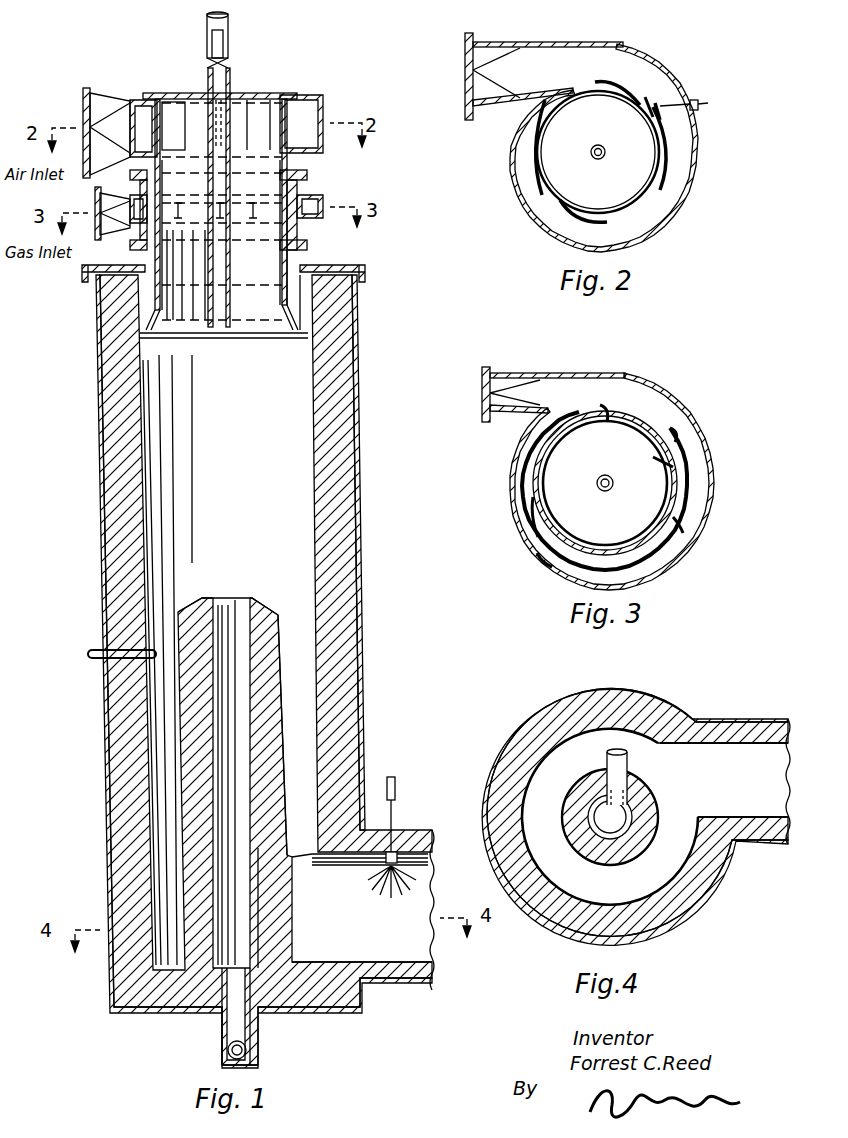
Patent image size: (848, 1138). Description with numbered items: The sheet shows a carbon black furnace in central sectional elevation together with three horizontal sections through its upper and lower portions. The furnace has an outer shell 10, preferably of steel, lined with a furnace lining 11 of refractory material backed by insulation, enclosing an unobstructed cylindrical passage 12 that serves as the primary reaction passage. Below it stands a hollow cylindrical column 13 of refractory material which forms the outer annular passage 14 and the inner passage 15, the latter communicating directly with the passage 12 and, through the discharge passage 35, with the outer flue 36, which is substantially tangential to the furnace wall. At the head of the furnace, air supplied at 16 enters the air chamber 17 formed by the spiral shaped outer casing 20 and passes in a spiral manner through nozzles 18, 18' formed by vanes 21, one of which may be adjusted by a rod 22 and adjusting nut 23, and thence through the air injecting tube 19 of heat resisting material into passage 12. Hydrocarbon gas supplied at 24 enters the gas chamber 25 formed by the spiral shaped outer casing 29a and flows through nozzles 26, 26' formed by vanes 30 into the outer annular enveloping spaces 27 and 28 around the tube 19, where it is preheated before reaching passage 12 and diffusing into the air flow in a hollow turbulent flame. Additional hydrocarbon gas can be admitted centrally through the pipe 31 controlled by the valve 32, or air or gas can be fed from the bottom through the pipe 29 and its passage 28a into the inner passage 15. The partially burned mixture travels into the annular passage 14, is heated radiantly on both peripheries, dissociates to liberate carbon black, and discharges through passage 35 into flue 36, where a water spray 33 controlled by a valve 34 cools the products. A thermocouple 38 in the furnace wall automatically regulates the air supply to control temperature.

In FIG. 1, the outer shell 10 is at (100, 583).
In FIG. 4, the outer shell 10 is at (512, 742).
In FIG. 1, the furnace lining 11 is at (118, 545).
In FIG. 4, the furnace lining 11 is at (555, 725).
In FIG. 1, the unobstructed cylindrical passage 12 is at (285, 452).
In FIG. 1, the hollow cylindrical column 13 is at (193, 725).
In FIG. 4, the hollow cylindrical column 13 is at (580, 805).
In FIG. 1, the outer annular passage 14 is at (300, 660).
In FIG. 4, the outer annular passage 14 is at (667, 860).
In FIG. 1, the inner passage 15 is at (242, 705).
In FIG. 1, the air supply 16 is at (88, 110).
In FIG. 2, the air supply 16 is at (472, 72).
In FIG. 1, the air chamber 17 is at (303, 118).
In FIG. 2, the air chamber 17 is at (645, 83).
In FIG. 1, the nozzle 18 is at (208, 127).
In FIG. 2, the nozzle 18 is at (598, 152).
In FIG. 1, the nozzle 18' is at (264, 125).
In FIG. 2, the nozzle 18' is at (599, 152).
In FIG. 1, the air injecting tube 19 is at (277, 328).
In FIG. 3, the air injecting tube 19 is at (653, 525).
In FIG. 2, the outer casing 20 is at (625, 52).
In FIG. 2, the vane 21 is at (597, 82).
In FIG. 2, the rod 22 is at (680, 101).
In FIG. 2, the adjusting nut 23 is at (697, 100).
In FIG. 1, the gas supply 24 is at (97, 200).
In FIG. 3, the gas supply 24 is at (482, 390).
In FIG. 1, the gas chamber 25 is at (310, 210).
In FIG. 3, the gas chamber 25 is at (670, 420).
In FIG. 1, the nozzle 26 is at (216, 225).
In FIG. 3, the nozzle 26 is at (607, 493).
In FIG. 1, the nozzle 26' is at (272, 225).
In FIG. 1, the outer annular enveloping space 27 is at (290, 258).
In FIG. 3, the outer annular enveloping space 27 is at (538, 477).
In FIG. 1, the annular enveloping space 28 is at (295, 305).
In FIG. 1, the bottom tube 28a is at (237, 983).
In FIG. 1, the pipe 29 is at (240, 1047).
In FIG. 4, the pipe 29 is at (607, 758).
In FIG. 3, the outer casing 29a is at (657, 395).
In FIG. 3, the vane 30 is at (595, 402).
In FIG. 1, the pipe 31 is at (222, 322).
In FIG. 2, the pipe 31 is at (593, 158).
In FIG. 3, the pipe 31 is at (600, 488).
In FIG. 1, the valve 32 is at (213, 66).
In FIG. 1, the water spray 33 is at (397, 858).
In FIG. 1, the valve 34 is at (395, 802).
In FIG. 1, the discharge passage 35 is at (318, 855).
In FIG. 1, the outer flue 36 is at (382, 950).
In FIG. 4, the outer flue 36 is at (737, 798).
In FIG. 1, the thermocouple 38 is at (88, 654).